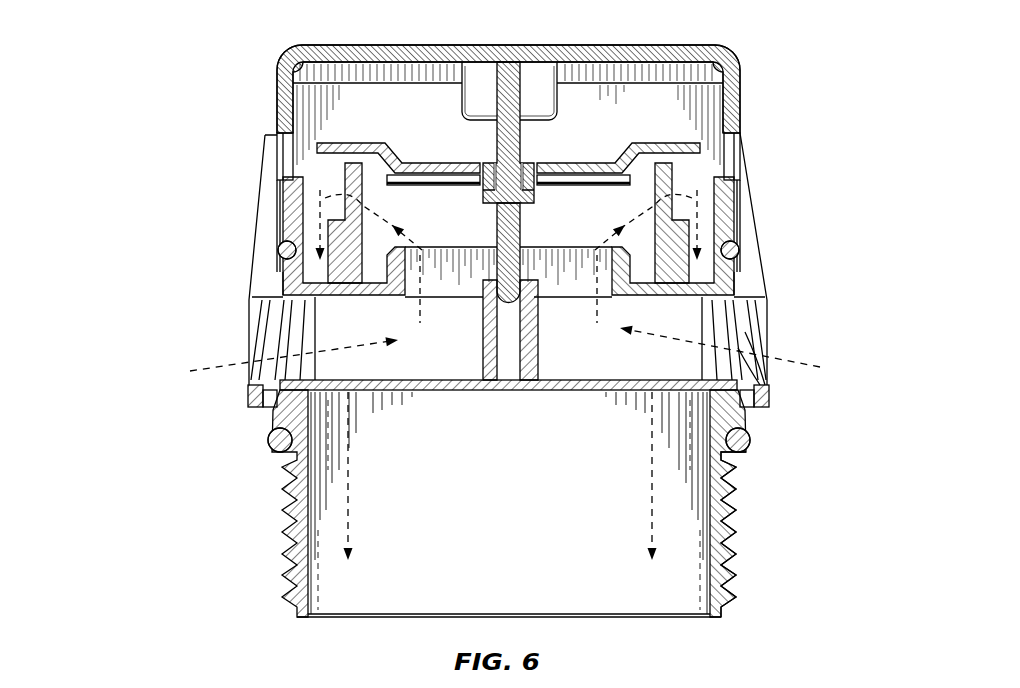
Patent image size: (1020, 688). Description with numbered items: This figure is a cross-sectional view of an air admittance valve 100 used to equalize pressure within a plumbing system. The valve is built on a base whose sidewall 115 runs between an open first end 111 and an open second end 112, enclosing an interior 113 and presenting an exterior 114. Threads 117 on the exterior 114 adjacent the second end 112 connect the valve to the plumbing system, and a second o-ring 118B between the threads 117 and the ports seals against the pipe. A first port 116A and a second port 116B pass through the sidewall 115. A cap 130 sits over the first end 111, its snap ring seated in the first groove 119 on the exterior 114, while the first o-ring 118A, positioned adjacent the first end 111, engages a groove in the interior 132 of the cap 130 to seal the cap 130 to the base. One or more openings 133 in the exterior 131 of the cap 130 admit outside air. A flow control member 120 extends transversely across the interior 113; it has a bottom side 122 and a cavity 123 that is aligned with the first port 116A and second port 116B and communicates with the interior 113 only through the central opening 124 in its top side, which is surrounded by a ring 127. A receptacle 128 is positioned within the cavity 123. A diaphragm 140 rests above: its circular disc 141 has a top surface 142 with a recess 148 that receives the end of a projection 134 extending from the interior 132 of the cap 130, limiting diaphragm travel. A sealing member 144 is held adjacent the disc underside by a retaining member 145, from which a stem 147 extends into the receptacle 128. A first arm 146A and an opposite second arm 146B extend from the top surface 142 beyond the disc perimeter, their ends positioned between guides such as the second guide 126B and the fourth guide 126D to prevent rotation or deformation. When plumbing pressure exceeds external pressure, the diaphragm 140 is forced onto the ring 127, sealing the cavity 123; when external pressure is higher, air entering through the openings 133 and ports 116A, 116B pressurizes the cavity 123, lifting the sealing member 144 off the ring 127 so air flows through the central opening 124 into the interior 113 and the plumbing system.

The air admittance valve 100 is at (162, 35).
The first end 111 is at (295, 180).
The second end 112 is at (303, 620).
The interior 113 is at (503, 561).
The exterior 114 is at (283, 228).
The sidewall 115 is at (740, 268).
The first port 116A is at (318, 323).
The second port 116B is at (700, 322).
The threads 117 is at (740, 540).
The first o-ring 118A is at (282, 250).
The second o-ring 118B is at (752, 445).
The first groove 119 is at (288, 200).
The flow control member 120 is at (420, 392).
The bottom side 122 is at (597, 393).
The cavity 123 is at (572, 363).
The central opening 124 is at (525, 246).
The second guide 126B is at (347, 168).
The fourth guide 126D is at (667, 176).
The ring 127 is at (683, 238).
The receptacle 128 is at (483, 347).
The cap 130 is at (703, 46).
The exterior 131 is at (262, 290).
The interior 132 is at (650, 112).
The openings 133 is at (757, 376).
The projection 134 is at (500, 152).
The diaphragm 140 is at (342, 103).
The circular disc 141 is at (423, 165).
The top surface 142 is at (598, 163).
The sealing member 144 is at (468, 186).
The retaining member 145 is at (536, 196).
The first arm 146A is at (337, 143).
The second arm 146B is at (680, 145).
The stem 147 is at (503, 236).
The recess 148 is at (524, 170).